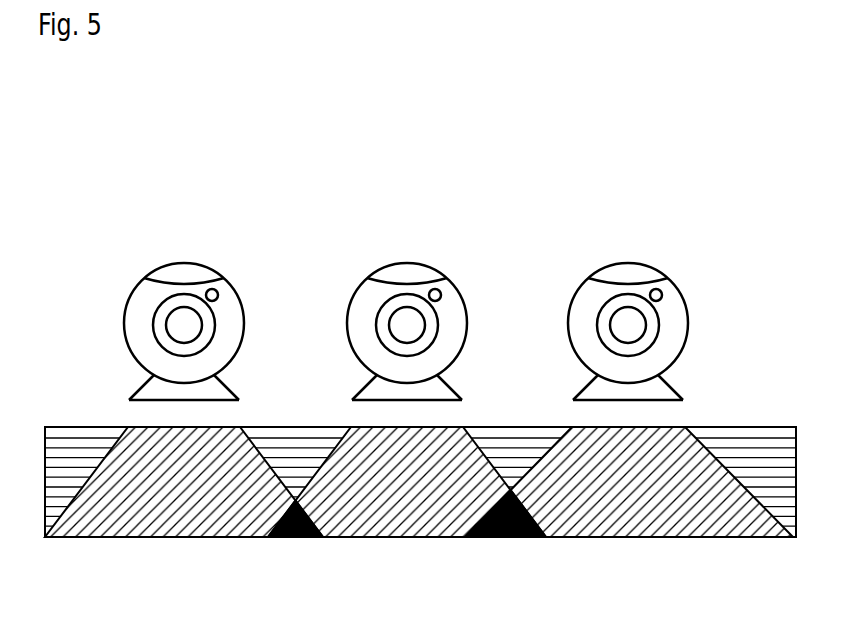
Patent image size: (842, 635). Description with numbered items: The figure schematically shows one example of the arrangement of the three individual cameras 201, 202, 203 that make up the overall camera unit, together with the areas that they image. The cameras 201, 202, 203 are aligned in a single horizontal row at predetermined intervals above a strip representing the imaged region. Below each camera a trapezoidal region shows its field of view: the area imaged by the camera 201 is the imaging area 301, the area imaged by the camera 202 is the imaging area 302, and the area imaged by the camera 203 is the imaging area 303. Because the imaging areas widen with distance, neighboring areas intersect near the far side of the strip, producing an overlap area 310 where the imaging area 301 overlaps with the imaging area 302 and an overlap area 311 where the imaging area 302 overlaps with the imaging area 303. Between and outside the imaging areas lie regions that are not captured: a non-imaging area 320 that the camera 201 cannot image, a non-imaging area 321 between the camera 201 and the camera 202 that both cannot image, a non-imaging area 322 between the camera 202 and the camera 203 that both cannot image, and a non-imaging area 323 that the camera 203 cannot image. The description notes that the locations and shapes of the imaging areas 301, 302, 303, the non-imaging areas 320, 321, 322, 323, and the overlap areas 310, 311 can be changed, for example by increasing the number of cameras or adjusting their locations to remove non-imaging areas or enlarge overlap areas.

The camera 201 is at (240, 307).
The camera 202 is at (463, 307).
The camera 203 is at (684, 307).
The imaging area 301 is at (178, 540).
The imaging area 302 is at (405, 540).
The imaging area 303 is at (645, 540).
The overlap area 310 is at (305, 540).
The overlap area 311 is at (530, 540).
The non-imaging area 320 is at (90, 438).
The non-imaging area 321 is at (305, 438).
The non-imaging area 322 is at (523, 438).
The non-imaging area 323 is at (772, 438).